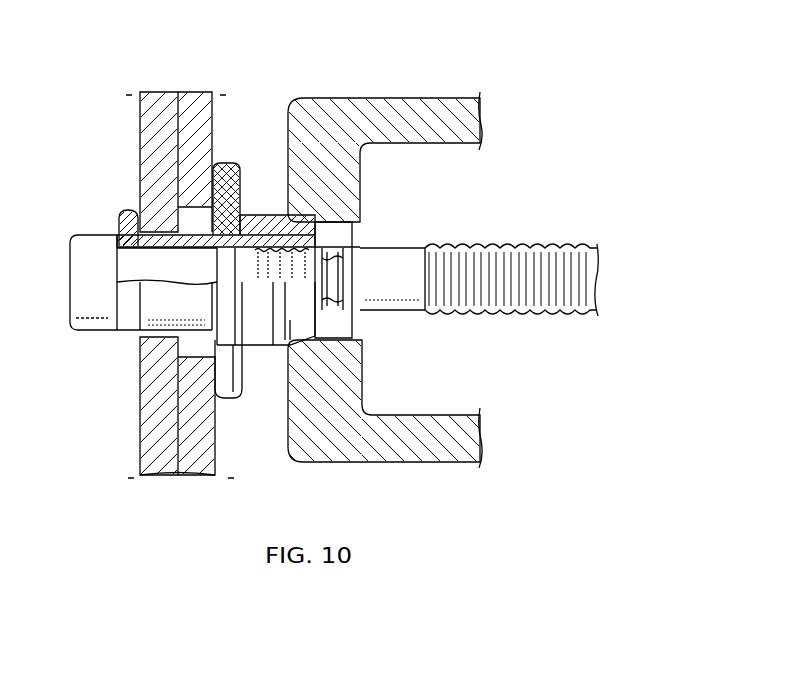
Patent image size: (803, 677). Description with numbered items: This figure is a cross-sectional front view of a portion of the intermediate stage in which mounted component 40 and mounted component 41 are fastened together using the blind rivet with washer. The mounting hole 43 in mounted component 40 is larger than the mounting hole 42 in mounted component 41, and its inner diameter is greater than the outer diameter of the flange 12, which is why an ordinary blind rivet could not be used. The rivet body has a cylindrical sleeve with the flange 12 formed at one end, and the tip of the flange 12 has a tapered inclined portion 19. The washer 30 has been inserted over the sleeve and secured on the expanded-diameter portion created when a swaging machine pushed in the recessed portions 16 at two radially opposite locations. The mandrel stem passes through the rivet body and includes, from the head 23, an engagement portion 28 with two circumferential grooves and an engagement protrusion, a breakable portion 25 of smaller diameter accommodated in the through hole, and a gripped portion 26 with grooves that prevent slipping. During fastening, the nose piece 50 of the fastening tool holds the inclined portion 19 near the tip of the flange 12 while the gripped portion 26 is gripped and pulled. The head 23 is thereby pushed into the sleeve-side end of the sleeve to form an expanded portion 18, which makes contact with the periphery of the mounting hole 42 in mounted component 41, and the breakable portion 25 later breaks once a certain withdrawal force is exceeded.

The mounted component 41 is at (152, 96).
The mounted component 40 is at (190, 92).
The nose piece 50 is at (390, 98).
The washer 30 is at (225, 163).
The expanded portion 18 is at (130, 212).
The head 23 is at (80, 235).
The flange 12 is at (257, 215).
The engagement portion 28 is at (318, 240).
The breakable portion 25 is at (340, 246).
The gripped portion 26 is at (510, 247).
The recessed portions 16 is at (210, 296).
The mounting hole 42 is at (140, 345).
The inclined portion 19 is at (292, 350).
The mounting hole 43 is at (236, 396).